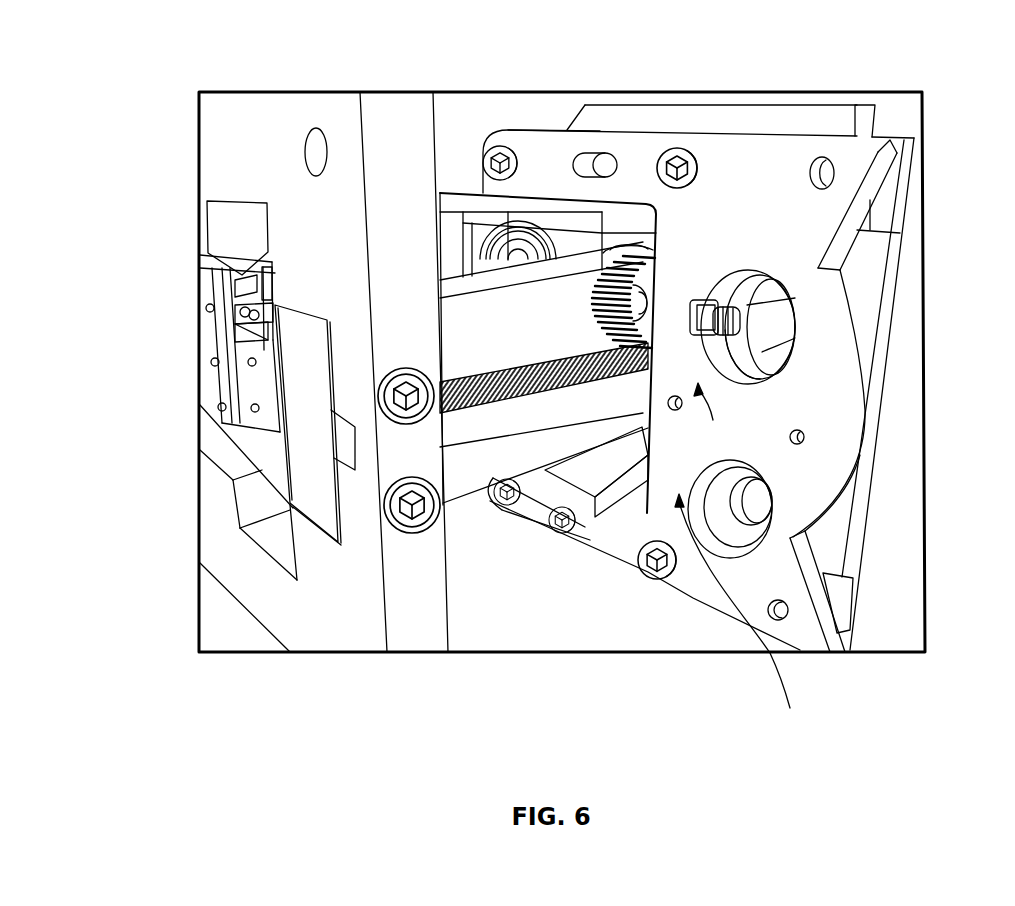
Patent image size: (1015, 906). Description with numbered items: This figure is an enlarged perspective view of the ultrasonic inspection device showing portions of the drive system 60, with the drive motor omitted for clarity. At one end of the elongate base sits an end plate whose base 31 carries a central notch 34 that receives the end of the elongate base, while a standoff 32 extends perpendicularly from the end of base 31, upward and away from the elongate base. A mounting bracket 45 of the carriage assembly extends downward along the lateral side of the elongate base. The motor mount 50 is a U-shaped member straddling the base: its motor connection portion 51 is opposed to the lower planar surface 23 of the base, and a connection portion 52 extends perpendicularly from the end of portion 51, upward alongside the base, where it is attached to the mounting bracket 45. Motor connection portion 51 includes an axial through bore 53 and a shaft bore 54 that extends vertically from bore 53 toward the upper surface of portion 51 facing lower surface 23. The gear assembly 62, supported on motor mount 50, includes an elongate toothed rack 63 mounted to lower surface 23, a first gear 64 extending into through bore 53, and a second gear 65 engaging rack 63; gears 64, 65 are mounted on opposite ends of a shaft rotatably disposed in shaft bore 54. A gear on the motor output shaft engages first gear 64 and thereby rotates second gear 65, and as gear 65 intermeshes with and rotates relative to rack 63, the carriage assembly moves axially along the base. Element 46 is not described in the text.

The lower planar surface 23 is at (468, 477).
The base 31 is at (340, 255).
The standoff 32 is at (220, 527).
The notch 34 is at (297, 312).
The mounting bracket 45 is at (537, 210).
The pulley 46 is at (502, 227).
The motor mount 50 is at (758, 158).
The motor connection portion 51 is at (835, 360).
The connection portion 52 is at (533, 143).
The through bore 53 is at (750, 273).
The shaft bore 54 is at (703, 300).
The drive system 60 is at (739, 618).
The gear assembly 62 is at (713, 416).
The toothed rack 63 is at (520, 367).
The first gear 64 is at (745, 370).
The second gear 65 is at (593, 293).